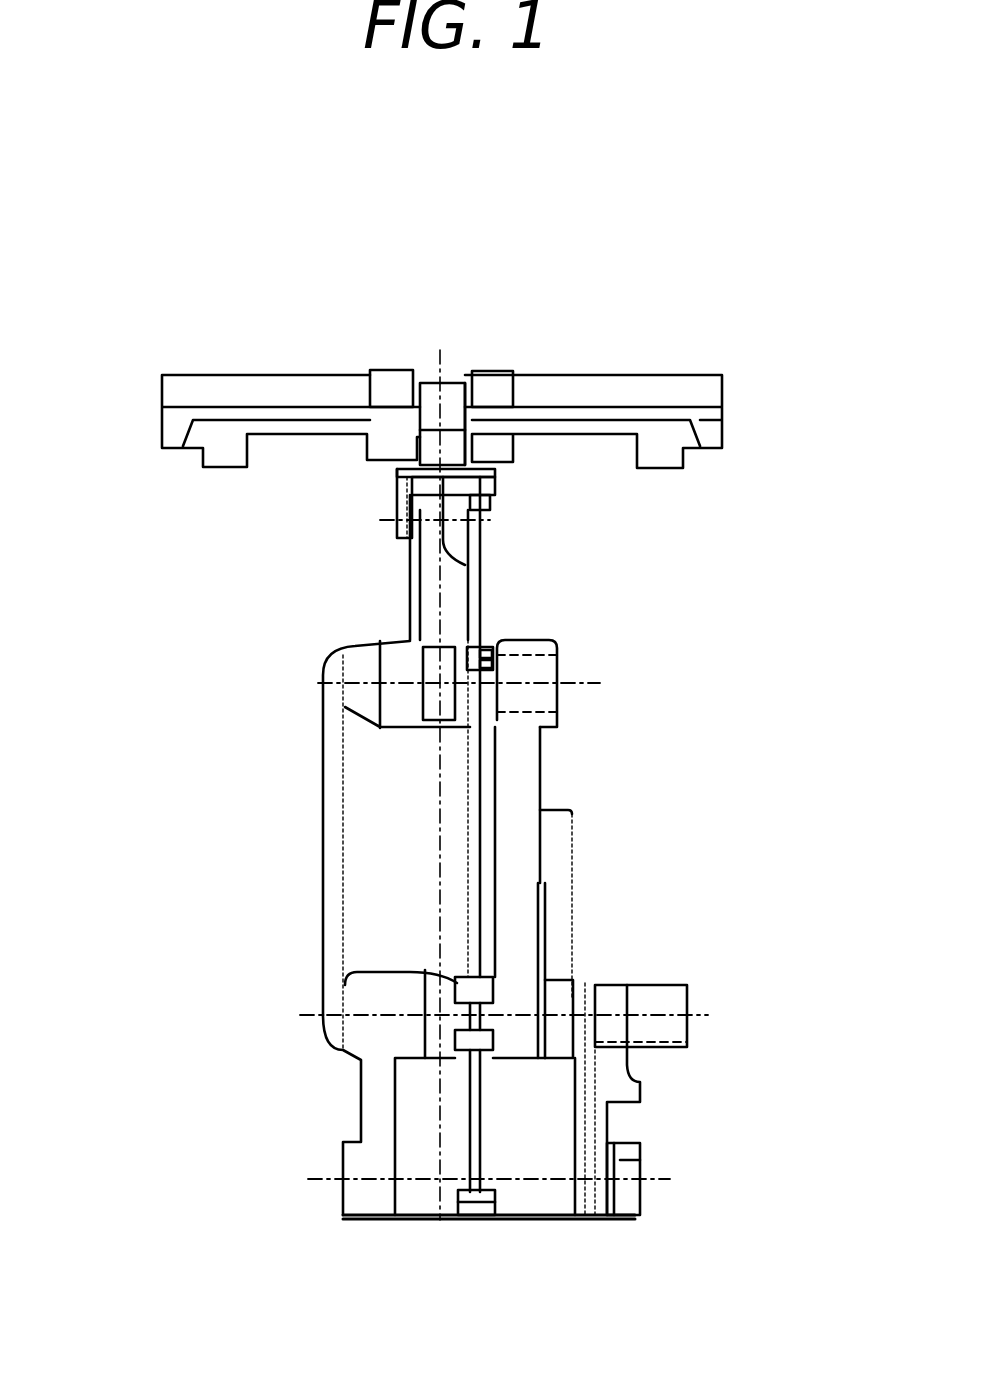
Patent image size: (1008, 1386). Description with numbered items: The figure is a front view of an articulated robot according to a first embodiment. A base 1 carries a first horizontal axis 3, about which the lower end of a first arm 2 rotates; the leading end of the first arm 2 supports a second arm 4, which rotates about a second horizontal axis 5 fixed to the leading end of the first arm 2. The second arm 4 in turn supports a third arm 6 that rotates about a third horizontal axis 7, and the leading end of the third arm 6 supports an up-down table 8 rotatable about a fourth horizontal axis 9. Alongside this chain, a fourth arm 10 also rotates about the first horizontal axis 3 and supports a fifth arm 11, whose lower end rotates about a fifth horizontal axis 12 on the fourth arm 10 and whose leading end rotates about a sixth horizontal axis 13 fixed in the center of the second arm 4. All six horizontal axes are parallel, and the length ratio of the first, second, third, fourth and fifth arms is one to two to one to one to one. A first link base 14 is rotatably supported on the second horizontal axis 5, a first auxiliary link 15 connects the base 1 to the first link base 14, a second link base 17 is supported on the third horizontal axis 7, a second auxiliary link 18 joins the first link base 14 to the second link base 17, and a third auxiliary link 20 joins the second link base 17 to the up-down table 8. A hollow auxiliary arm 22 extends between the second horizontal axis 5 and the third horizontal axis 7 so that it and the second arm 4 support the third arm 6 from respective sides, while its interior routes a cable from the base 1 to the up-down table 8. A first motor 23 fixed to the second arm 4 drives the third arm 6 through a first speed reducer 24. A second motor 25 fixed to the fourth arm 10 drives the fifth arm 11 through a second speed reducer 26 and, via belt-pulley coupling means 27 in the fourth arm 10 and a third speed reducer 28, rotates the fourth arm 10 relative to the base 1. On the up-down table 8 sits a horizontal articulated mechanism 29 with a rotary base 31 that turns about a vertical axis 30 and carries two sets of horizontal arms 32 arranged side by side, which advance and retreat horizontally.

The base 1 is at (510, 1222).
The first arm 2 is at (370, 1103).
The first horizontal axis 3 is at (290, 1179).
The second arm 4 is at (545, 806).
The second horizontal axis 5 is at (290, 1015).
The third arm 6 is at (410, 600).
The third horizontal axis 7 is at (300, 683).
The up-down table 8 is at (495, 500).
The fourth horizontal axis 9 is at (365, 520).
The fourth arm 10 is at (640, 1085).
The fifth arm 11 is at (562, 910).
The fifth horizontal axis 12 is at (732, 1028).
The sixth horizontal axis 13 is at (602, 840).
The first link base 14 is at (460, 985).
The first auxiliary link 15 is at (475, 1108).
The second link base 17 is at (493, 648).
The second auxiliary link 18 is at (585, 848).
The third auxiliary link 20 is at (480, 590).
The auxiliary arm 22 is at (325, 790).
The first motor 23 is at (557, 668).
The first speed reducer 24 is at (420, 652).
The second motor 25 is at (660, 1000).
The second speed reducer 26 is at (560, 1002).
The coupling means 27 is at (598, 1222).
The third speed reducer 28 is at (622, 1185).
The horizontal articulated mechanism 29 is at (478, 348).
The vertical axis 30 is at (438, 360).
The rotary base 31 is at (420, 443).
The horizontal arms 32 is at (178, 392).